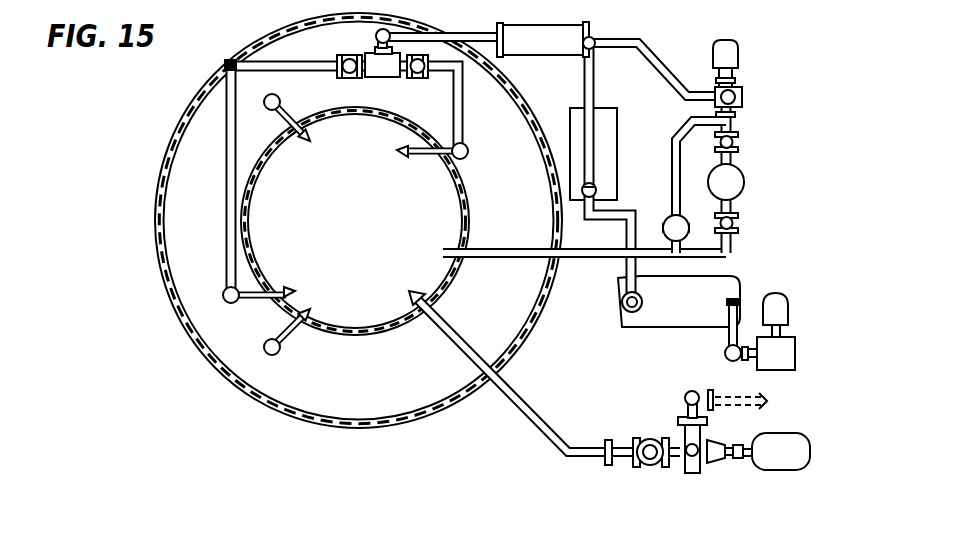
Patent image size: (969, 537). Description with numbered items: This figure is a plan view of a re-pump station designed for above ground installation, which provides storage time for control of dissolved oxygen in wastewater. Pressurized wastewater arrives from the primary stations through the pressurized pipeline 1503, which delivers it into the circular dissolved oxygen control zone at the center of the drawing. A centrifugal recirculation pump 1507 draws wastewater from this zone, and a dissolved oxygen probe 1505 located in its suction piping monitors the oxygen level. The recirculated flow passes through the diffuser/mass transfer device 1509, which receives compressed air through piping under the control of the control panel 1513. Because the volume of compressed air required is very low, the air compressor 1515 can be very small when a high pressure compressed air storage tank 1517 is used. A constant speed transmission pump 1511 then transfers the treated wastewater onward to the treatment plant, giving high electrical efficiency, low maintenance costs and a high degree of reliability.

The pressurized pipeline 1503 is at (314, 148).
The dissolved oxygen probe 1505 is at (750, 193).
The centrifugal recirculation pump 1507 is at (744, 56).
The diffuser/mass transfer device 1509 is at (521, 52).
The constant speed transmission pump 1511 is at (771, 477).
The control panel 1513 is at (623, 143).
The air compressor 1515 is at (770, 372).
The high pressure compressed air storage tank 1517 is at (686, 336).